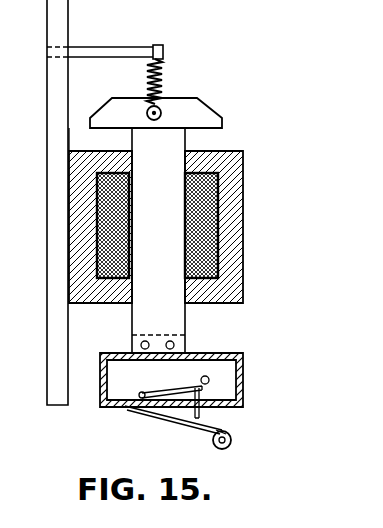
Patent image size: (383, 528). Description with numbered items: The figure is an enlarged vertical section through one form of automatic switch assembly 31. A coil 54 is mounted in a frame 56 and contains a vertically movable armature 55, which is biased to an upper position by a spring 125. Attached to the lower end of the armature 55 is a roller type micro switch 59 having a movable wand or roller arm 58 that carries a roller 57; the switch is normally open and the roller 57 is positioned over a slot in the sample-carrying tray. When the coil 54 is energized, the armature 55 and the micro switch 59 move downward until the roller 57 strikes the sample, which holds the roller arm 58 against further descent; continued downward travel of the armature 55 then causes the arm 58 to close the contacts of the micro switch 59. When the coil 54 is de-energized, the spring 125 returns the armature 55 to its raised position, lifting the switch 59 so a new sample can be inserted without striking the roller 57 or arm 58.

The automatic switch assembly 31 is at (251, 163).
The coil 54 is at (215, 203).
The armature 55 is at (186, 145).
The frame 56 is at (240, 255).
The roller 57 is at (232, 440).
The roller arm 58 is at (183, 425).
The micro switch 59 is at (228, 385).
The spring 125 is at (161, 82).